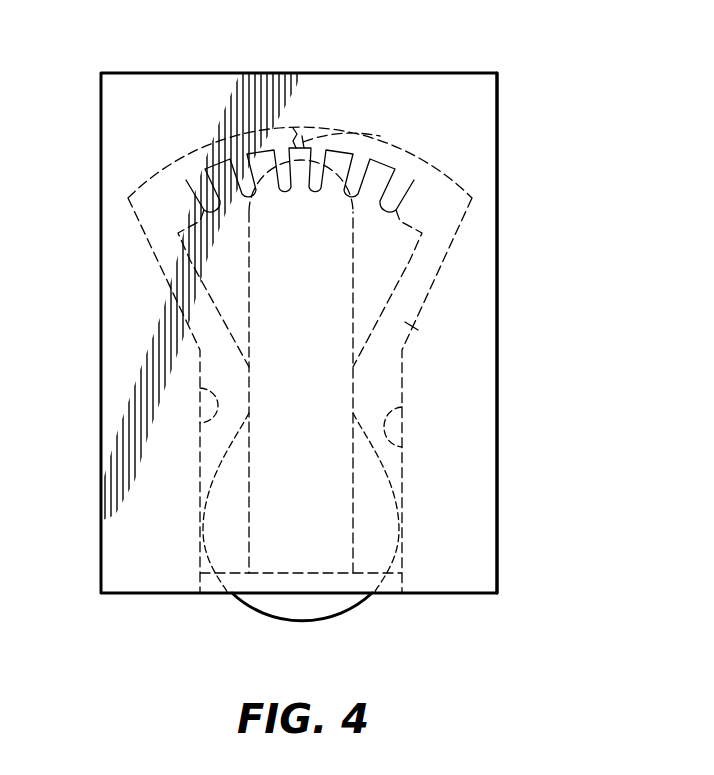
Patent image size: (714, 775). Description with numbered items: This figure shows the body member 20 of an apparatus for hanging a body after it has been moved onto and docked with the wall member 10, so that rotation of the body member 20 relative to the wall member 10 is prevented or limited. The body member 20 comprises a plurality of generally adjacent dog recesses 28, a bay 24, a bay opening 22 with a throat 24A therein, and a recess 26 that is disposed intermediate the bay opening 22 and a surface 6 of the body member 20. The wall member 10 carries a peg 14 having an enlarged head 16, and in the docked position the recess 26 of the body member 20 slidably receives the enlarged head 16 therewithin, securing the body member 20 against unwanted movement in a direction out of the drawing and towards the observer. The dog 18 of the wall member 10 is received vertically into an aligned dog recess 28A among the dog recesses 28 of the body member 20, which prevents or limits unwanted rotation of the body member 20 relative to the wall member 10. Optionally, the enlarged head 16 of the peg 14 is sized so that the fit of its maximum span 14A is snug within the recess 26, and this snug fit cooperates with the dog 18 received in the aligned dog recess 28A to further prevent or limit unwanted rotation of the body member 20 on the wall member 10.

The wall member 10 is at (497, 302).
The body member 20 is at (497, 135).
The bay 24 is at (394, 264).
The peg 14 is at (320, 482).
The maximum span 14A is at (200, 523).
The bay opening 22 is at (203, 388).
The enlarged head 16 is at (223, 545).
The surface 6 is at (205, 320).
The recess 26 is at (417, 347).
The dog 18 is at (322, 128).
The aligned dog recess 28A is at (293, 128).
The dog recesses 28 is at (277, 73).
The throat 24A is at (383, 582).